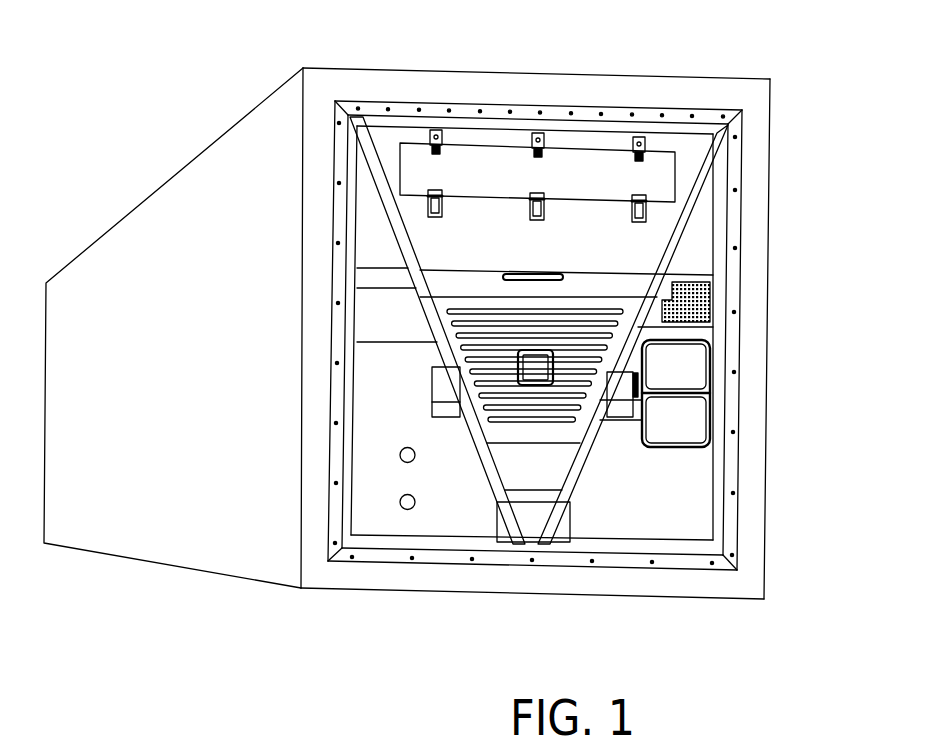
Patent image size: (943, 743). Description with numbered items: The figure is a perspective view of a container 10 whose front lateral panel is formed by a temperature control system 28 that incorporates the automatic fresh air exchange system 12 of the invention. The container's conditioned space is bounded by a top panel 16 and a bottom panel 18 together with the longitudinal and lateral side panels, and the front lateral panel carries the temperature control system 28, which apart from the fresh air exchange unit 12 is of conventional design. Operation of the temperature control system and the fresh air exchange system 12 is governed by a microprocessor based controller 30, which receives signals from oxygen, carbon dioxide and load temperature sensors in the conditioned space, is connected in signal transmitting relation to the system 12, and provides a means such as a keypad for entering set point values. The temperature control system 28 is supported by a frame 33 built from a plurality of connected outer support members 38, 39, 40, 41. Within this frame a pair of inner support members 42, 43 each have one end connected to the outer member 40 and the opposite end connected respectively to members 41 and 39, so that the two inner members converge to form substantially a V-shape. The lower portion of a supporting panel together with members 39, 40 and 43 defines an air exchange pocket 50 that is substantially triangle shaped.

The container 10 is at (118, 172).
The automatic fresh air exchange system 12 is at (730, 292).
The top panel 16 is at (412, 72).
The bottom panel 18 is at (453, 596).
The temperature control system 28 is at (676, 212).
The microprocessor based controller 30 is at (698, 418).
The frame 33 is at (458, 480).
The outer support member 38 is at (570, 124).
The outer support member 39 is at (722, 237).
The outer support member 40 is at (670, 544).
The outer support member 41 is at (348, 322).
The inner support member 42 is at (397, 233).
The inner support member 43 is at (583, 443).
The air exchange pocket 50 is at (713, 508).